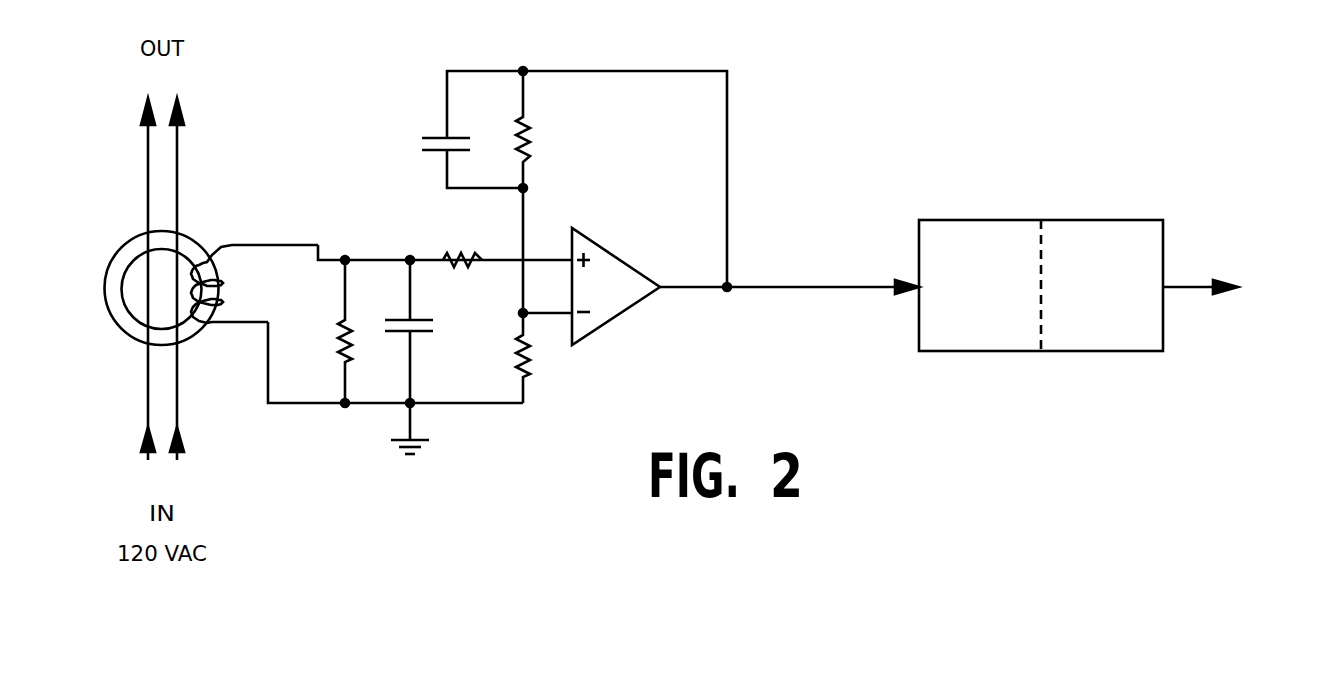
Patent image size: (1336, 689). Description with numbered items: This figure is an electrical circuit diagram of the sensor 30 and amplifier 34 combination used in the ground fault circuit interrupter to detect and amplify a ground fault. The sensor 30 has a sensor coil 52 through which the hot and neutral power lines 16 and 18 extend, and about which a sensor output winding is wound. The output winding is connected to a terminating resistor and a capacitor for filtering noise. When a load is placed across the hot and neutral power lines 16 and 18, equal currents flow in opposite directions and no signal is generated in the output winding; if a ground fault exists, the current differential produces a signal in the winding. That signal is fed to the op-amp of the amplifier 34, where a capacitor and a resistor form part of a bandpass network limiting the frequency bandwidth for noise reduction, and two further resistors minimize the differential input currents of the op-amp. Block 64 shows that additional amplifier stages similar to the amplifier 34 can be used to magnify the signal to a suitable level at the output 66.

The hot power line 16 is at (148, 169).
The neutral power line 18 is at (177, 148).
The sensor coil 52 is at (190, 232).
The sensor 30 is at (290, 463).
The amplifier 34 is at (636, 345).
The block of additional amplifier stages 64 is at (973, 220).
The output 66 is at (1185, 287).